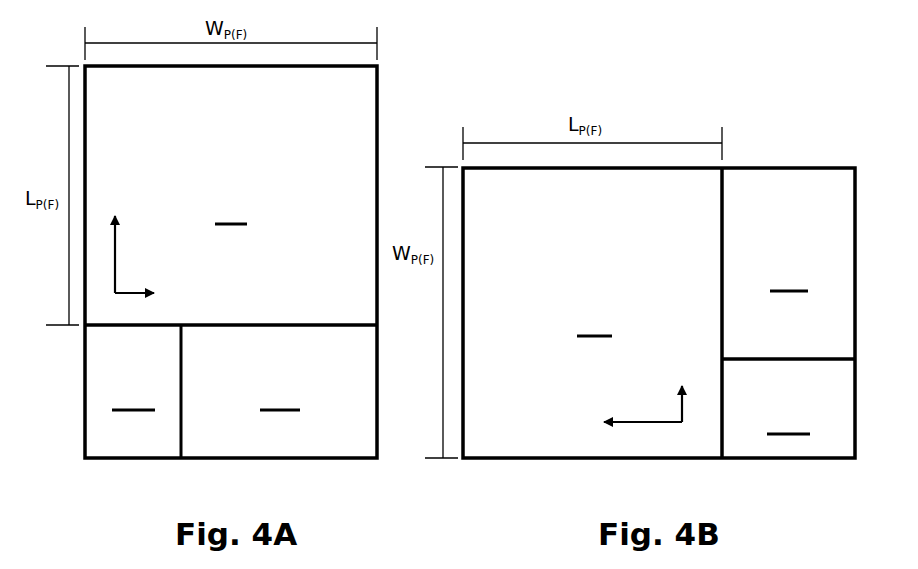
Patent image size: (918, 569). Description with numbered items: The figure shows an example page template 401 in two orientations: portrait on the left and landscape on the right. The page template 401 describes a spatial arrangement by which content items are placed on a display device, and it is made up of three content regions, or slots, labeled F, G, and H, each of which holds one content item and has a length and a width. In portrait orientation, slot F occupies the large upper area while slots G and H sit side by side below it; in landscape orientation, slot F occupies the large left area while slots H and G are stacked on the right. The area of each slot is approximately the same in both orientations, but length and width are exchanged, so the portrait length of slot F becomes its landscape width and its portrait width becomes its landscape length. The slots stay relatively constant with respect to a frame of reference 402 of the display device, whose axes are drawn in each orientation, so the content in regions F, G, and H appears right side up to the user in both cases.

In FIG. 4A, the page template 401 is at (378, 90).
In FIG. 4B, the page template 401 is at (747, 166).
In FIG. 4A, the frame of reference 402 is at (119, 290).
In FIG. 4B, the frame of reference 402 is at (677, 418).
In FIG. 4A, the slot F is at (231, 201).
In FIG. 4B, the slot F is at (594, 311).
In FIG. 4A, the slot G is at (133, 385).
In FIG. 4B, the slot G is at (788, 411).
In FIG. 4A, the slot H is at (280, 385).
In FIG. 4B, the slot H is at (790, 268).